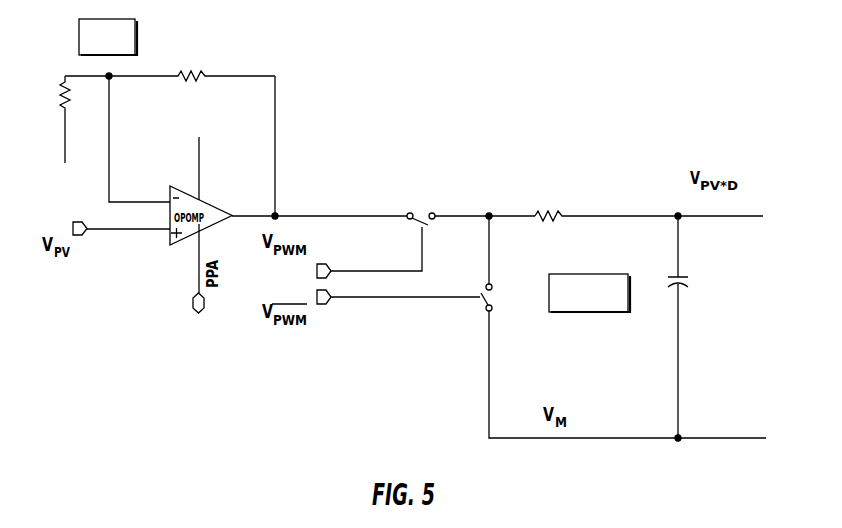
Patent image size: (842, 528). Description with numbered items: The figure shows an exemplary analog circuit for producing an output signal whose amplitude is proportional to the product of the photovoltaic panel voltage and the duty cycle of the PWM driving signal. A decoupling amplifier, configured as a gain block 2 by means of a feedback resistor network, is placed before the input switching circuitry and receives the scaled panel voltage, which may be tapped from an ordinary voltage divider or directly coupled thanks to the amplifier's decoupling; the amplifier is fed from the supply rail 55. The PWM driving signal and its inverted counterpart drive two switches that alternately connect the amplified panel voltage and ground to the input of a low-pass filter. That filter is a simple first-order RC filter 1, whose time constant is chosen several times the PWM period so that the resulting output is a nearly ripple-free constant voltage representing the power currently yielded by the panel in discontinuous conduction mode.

The gain block G=2 (feedback network) 2 is at (170, 117).
The V55 supply voltage 55 is at (120, 138).
The RC filter with time constant RC=1BT 1 is at (649, 326).